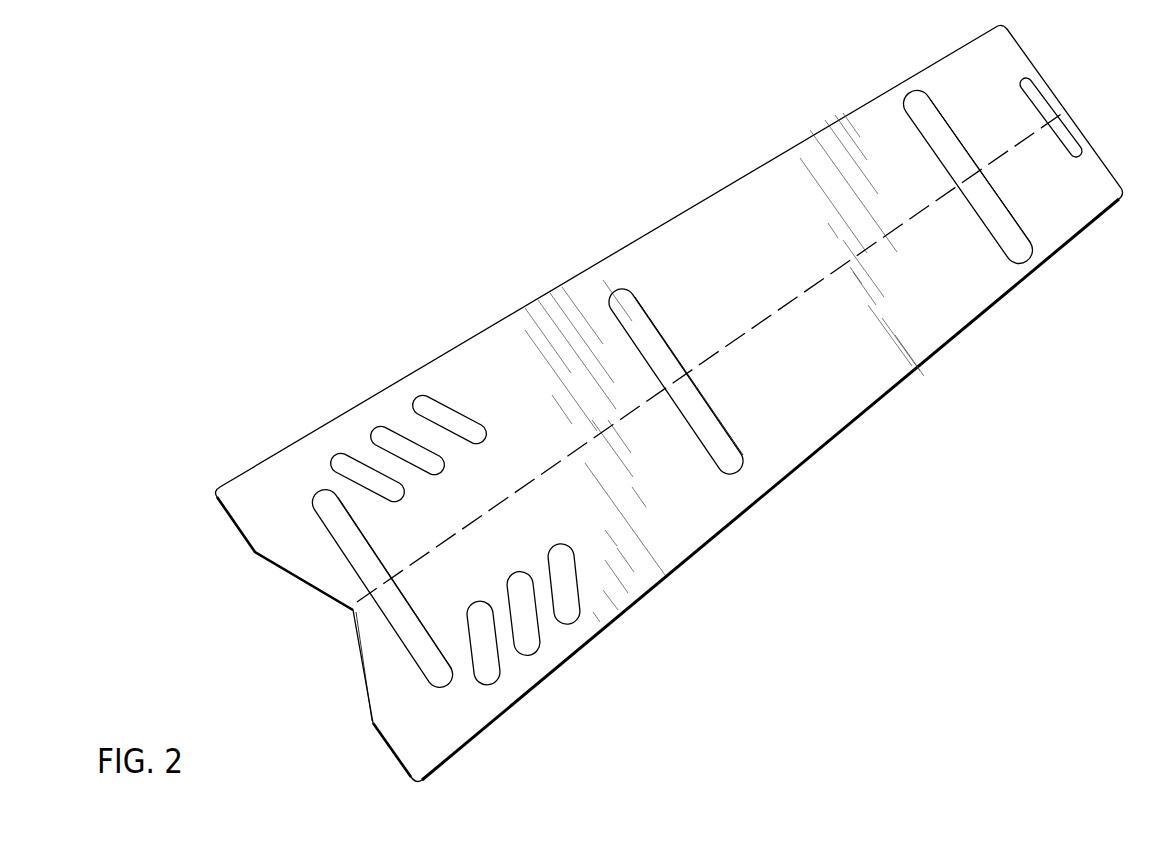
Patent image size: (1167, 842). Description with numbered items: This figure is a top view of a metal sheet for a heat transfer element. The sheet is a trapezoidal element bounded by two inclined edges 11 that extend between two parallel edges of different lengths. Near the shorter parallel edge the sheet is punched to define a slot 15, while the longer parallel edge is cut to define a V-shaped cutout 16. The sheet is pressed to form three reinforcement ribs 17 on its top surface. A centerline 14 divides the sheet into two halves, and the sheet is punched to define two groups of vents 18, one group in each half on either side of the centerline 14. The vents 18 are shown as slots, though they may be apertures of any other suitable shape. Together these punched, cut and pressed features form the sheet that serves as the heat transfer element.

The inclined edge 11 is at (732, 526).
The centerline 14 is at (742, 338).
The slot 15 is at (1030, 90).
The V-shaped cutout 16 is at (345, 618).
The reinforcement rib 17 is at (615, 297).
The vents 18 is at (345, 467).